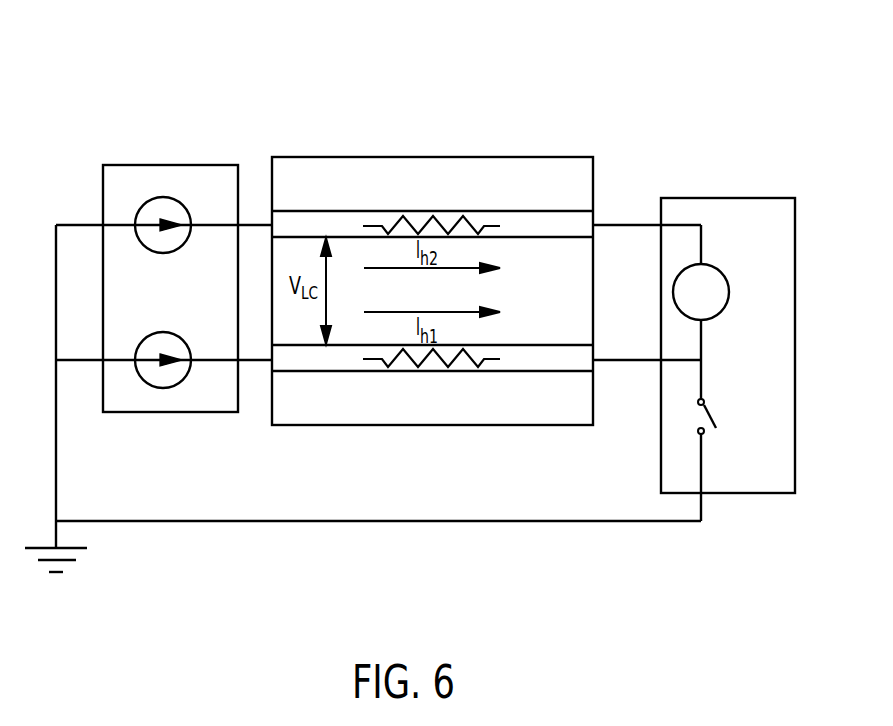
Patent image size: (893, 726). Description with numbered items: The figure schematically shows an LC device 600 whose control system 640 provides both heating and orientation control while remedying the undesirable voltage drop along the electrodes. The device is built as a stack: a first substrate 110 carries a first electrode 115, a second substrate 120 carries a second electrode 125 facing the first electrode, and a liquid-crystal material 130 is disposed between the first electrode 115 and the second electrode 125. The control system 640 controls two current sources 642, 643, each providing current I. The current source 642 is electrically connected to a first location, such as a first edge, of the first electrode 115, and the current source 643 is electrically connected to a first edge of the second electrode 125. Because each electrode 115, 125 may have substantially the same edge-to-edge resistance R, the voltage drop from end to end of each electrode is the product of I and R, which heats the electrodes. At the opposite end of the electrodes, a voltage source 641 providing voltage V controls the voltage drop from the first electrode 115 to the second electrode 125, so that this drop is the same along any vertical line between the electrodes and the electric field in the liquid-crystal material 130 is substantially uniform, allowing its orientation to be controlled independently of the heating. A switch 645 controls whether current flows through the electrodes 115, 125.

The LC device 600 is at (446, 74).
The control system 640 is at (138, 165).
The current source 643 is at (166, 209).
The current source 642 is at (166, 344).
The voltage source 641 is at (720, 294).
The switch 645 is at (711, 418).
The liquid-crystal material 130 is at (582, 296).
The second substrate 120 is at (512, 170).
The second electrode 125 is at (537, 225).
The first electrode 115 is at (537, 360).
The first substrate 110 is at (543, 407).